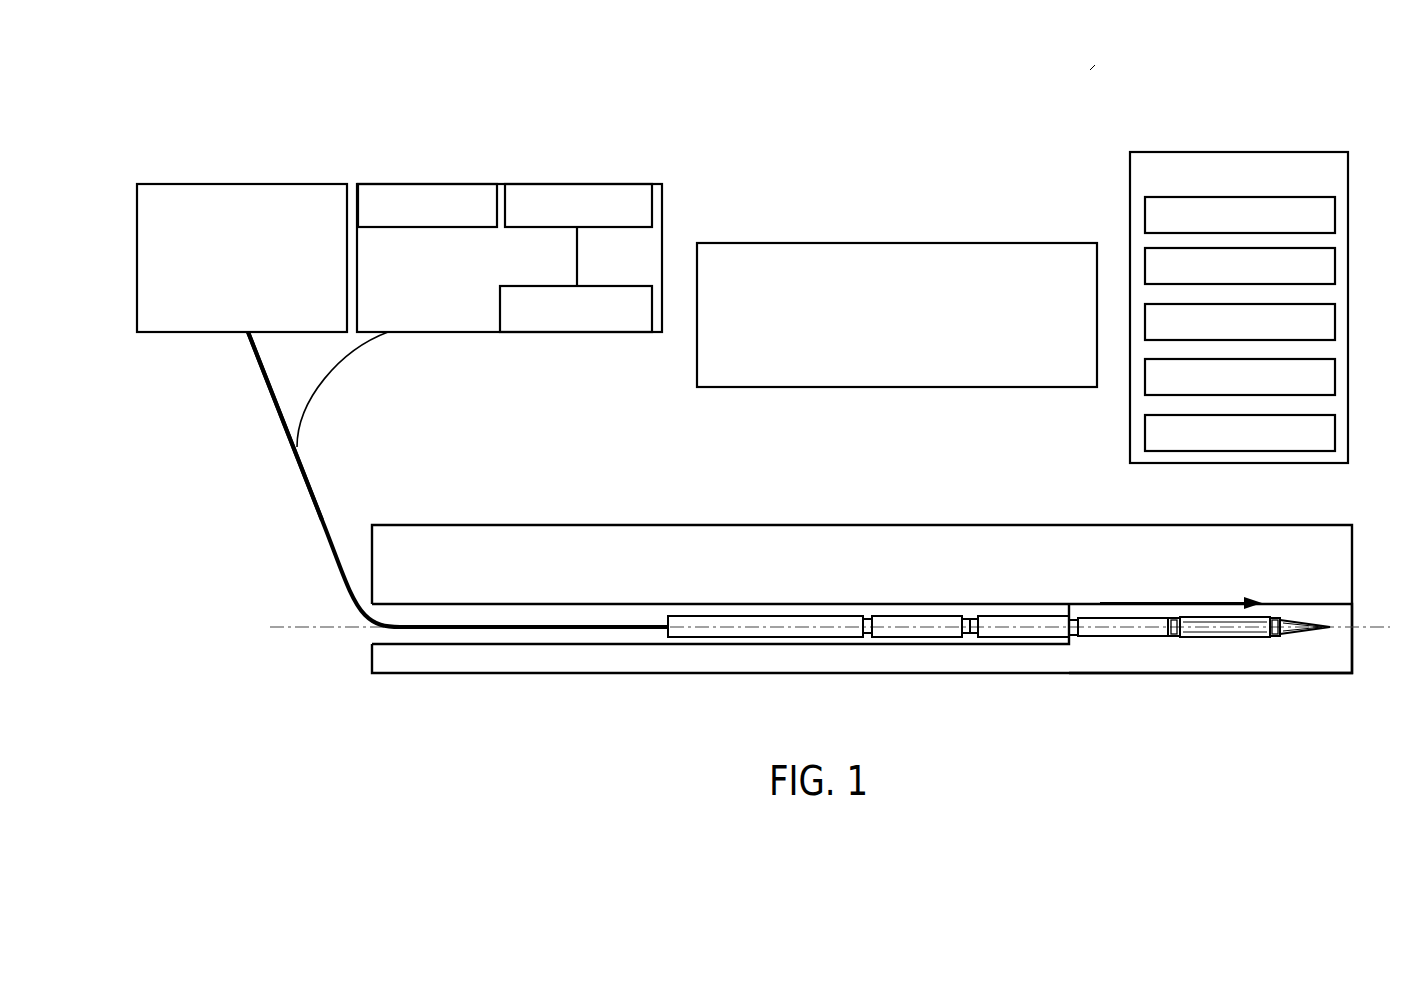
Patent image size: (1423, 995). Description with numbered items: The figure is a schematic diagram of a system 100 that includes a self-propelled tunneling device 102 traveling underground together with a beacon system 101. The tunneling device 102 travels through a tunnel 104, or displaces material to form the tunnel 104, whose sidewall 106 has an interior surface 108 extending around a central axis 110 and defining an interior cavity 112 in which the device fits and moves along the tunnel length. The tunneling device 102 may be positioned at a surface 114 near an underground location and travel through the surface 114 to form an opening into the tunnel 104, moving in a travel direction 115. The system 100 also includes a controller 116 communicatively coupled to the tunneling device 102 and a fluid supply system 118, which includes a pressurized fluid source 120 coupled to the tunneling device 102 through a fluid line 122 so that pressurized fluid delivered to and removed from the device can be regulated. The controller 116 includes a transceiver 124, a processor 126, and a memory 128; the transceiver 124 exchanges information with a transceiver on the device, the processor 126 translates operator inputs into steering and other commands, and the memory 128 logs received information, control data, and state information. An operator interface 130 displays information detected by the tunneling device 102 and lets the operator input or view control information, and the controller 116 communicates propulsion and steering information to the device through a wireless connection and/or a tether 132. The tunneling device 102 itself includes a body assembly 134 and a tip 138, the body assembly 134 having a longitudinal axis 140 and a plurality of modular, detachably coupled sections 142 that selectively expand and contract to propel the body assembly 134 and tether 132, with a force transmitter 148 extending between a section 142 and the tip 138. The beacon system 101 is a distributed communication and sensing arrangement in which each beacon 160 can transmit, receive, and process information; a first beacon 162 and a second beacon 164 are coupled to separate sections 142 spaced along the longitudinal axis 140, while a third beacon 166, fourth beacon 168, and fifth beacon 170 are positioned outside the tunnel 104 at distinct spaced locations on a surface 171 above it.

The system 100 is at (1096, 64).
The beacon system 101 is at (1191, 152).
The tunneling device 102 is at (815, 602).
The tunnel 104 is at (429, 592).
The sidewall 106 is at (502, 640).
The interior surface 108 is at (552, 615).
The central axis 110 is at (266, 622).
The interior cavity 112 is at (620, 617).
The surface 114 is at (372, 650).
The travel direction 115 is at (1125, 605).
The controller 116 is at (665, 199).
The fluid supply system 118 is at (146, 168).
The pressurized fluid source 120 is at (188, 183).
The fluid line 122 is at (266, 388).
The transceiver 124 is at (556, 332).
The processor 126 is at (413, 184).
The memory 128 is at (565, 184).
The operator interface 130 is at (822, 388).
The tether 132 is at (252, 448).
The body assembly 134 is at (936, 652).
The tip 138 is at (1290, 640).
The longitudinal axis 140 is at (704, 632).
The sections 142 is at (990, 616).
The force transmitter 148 is at (1120, 638).
The beacon 160 is at (1140, 190).
The first beacon 162 is at (1345, 213).
The second beacon 164 is at (1345, 268).
The third beacon 166 is at (1345, 324).
The fourth beacon 168 is at (1345, 380).
The fifth beacon 170 is at (1345, 436).
The surface 171 is at (705, 525).